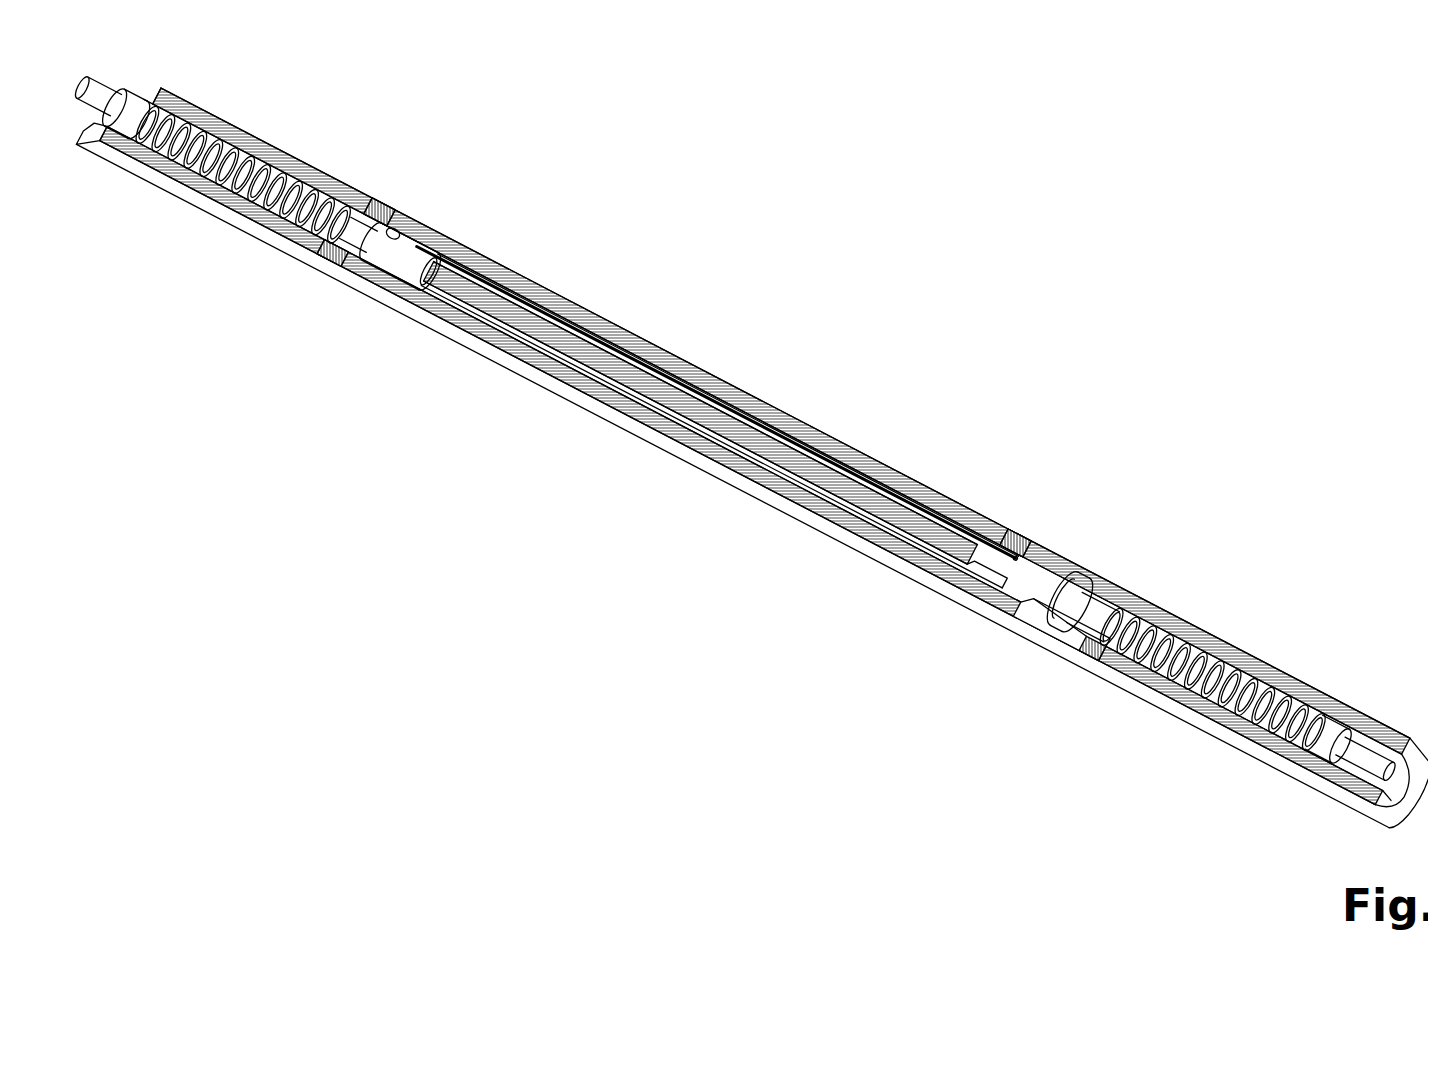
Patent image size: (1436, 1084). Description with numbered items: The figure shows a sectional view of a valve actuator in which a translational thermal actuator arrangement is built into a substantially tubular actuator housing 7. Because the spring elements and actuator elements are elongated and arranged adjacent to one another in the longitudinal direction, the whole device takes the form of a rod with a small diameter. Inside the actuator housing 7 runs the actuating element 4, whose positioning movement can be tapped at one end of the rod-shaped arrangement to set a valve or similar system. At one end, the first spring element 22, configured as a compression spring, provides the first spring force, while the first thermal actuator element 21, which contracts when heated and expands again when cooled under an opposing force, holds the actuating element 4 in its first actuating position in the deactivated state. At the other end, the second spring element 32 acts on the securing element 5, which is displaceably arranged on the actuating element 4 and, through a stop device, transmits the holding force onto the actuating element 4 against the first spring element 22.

The actuating element 4 is at (775, 447).
The securing element 5 is at (1082, 602).
The actuator housing 7 is at (855, 455).
The first thermal actuator element 21 is at (975, 527).
The first spring element 22 is at (281, 168).
The second spring element 32 is at (1222, 655).